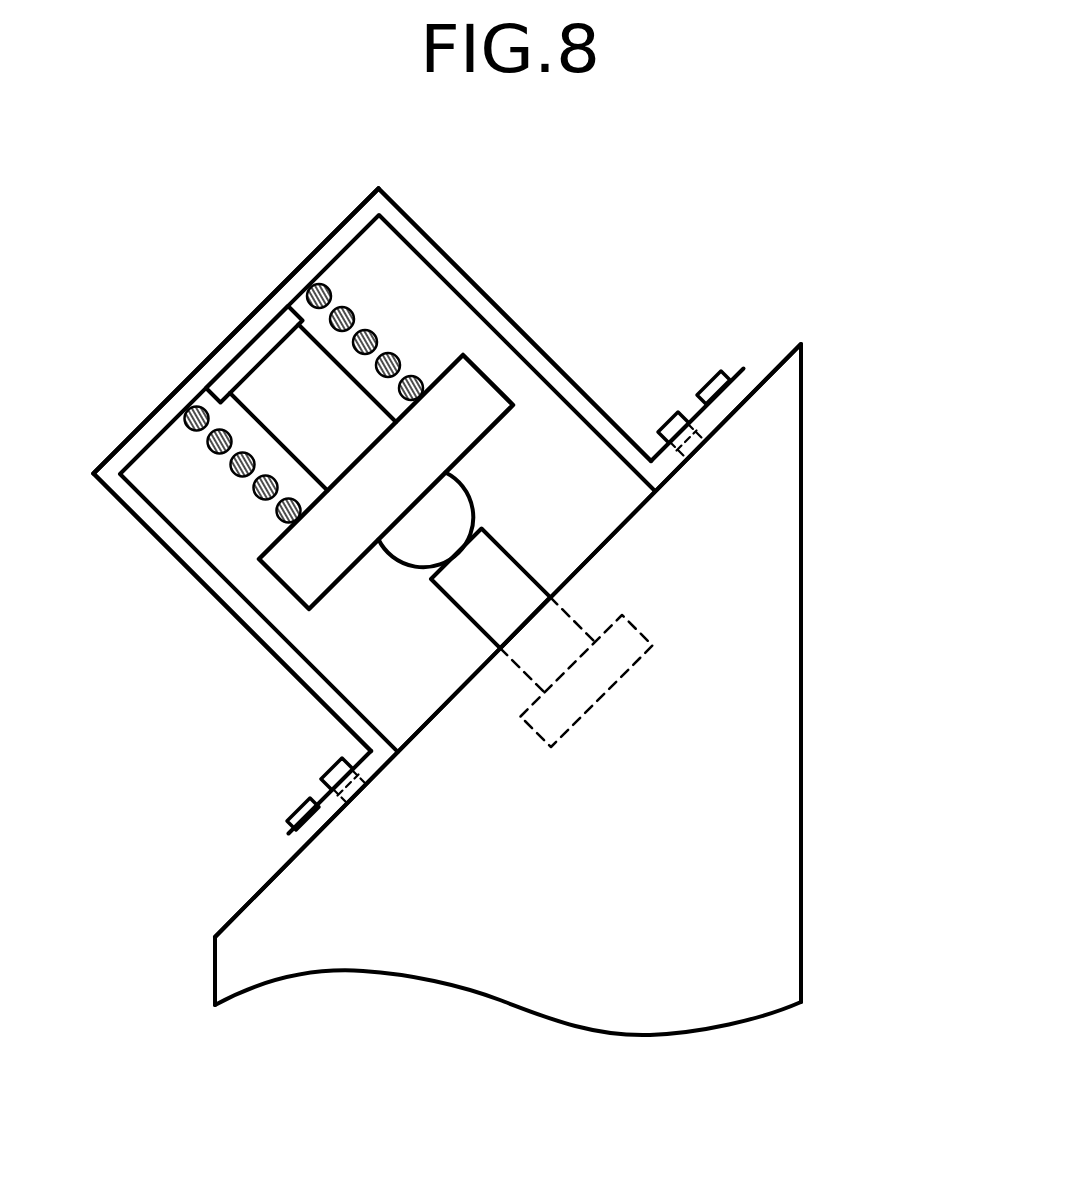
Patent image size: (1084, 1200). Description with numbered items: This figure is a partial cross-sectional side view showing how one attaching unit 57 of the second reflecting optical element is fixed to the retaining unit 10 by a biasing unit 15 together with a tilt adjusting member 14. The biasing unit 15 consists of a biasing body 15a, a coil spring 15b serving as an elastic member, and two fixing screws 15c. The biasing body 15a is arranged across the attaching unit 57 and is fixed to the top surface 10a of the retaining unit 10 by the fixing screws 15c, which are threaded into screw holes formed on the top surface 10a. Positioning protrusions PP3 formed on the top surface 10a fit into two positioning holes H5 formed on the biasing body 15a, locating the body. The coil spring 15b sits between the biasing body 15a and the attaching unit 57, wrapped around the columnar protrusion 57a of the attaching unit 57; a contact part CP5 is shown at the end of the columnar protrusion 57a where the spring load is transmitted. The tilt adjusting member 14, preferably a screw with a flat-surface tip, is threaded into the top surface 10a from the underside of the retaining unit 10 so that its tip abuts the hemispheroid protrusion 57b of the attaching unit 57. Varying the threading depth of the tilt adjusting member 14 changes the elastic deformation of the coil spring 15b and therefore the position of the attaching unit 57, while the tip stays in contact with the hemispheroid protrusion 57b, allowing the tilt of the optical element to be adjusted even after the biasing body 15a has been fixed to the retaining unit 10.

The retaining unit 10 is at (782, 724).
The top surface 10a is at (779, 362).
The tilt adjusting member 14 is at (613, 686).
The biasing unit 15 is at (422, 204).
The biasing body 15a is at (356, 212).
The coil spring 15b is at (392, 318).
The fixing screws 15c is at (709, 384).
The attaching unit 57 is at (480, 438).
The columnar protrusion 57a is at (302, 446).
The hemispheroid protrusion 57b is at (410, 548).
The contact plate CP5 is at (243, 375).
The positioning protrusions PP3 is at (665, 425).
The positioning holes H5 is at (697, 450).